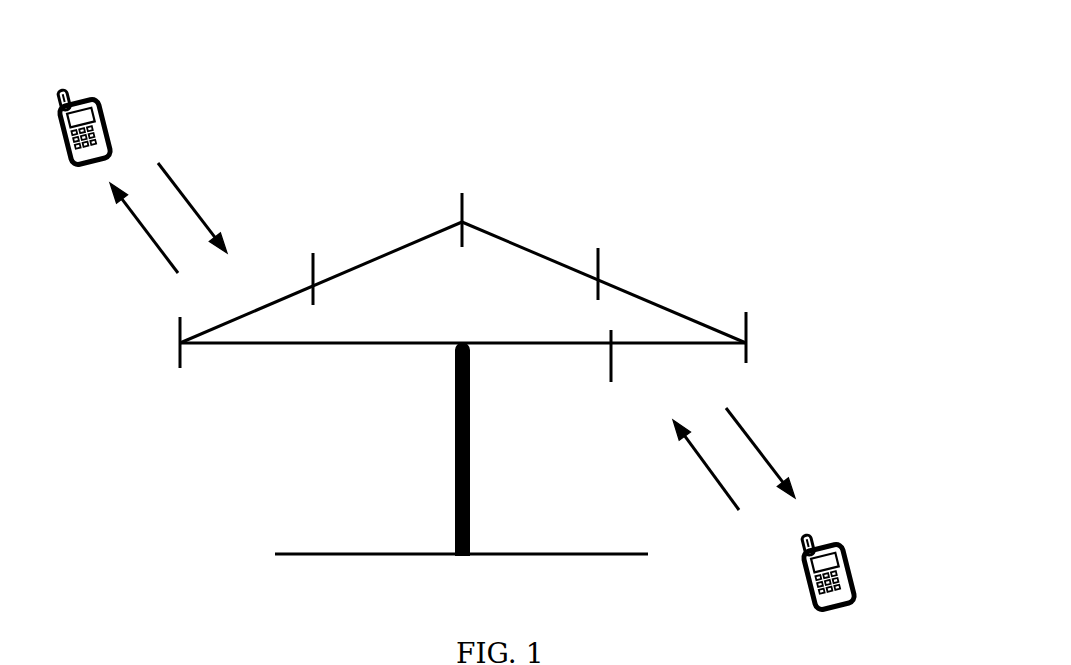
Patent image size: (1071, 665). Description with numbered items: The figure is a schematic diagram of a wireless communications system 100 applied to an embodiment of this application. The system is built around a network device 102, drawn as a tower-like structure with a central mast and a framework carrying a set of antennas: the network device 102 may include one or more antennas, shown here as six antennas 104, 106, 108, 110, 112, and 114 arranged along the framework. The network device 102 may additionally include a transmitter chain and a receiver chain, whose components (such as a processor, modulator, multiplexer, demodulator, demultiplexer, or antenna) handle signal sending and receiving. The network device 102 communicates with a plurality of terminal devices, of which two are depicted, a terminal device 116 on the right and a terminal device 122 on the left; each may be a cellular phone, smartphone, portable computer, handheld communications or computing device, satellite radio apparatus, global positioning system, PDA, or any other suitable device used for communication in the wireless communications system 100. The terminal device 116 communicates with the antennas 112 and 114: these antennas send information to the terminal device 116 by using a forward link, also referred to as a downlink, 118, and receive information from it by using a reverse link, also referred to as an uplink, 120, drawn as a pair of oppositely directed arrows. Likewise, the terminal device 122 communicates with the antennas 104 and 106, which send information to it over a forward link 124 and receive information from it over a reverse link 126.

The wireless communications system 100 is at (685, 90).
The network device 102 is at (470, 493).
The antenna 104 is at (181, 355).
The antenna 106 is at (314, 297).
The antenna 108 is at (464, 208).
The antenna 110 is at (600, 263).
The antenna 112 is at (748, 325).
The antenna 114 is at (612, 370).
The terminal device 116 is at (855, 570).
The forward link 118 is at (750, 430).
The reverse link 120 is at (718, 490).
The terminal device 122 is at (110, 103).
The forward link 124 is at (150, 240).
The reverse link 126 is at (177, 183).